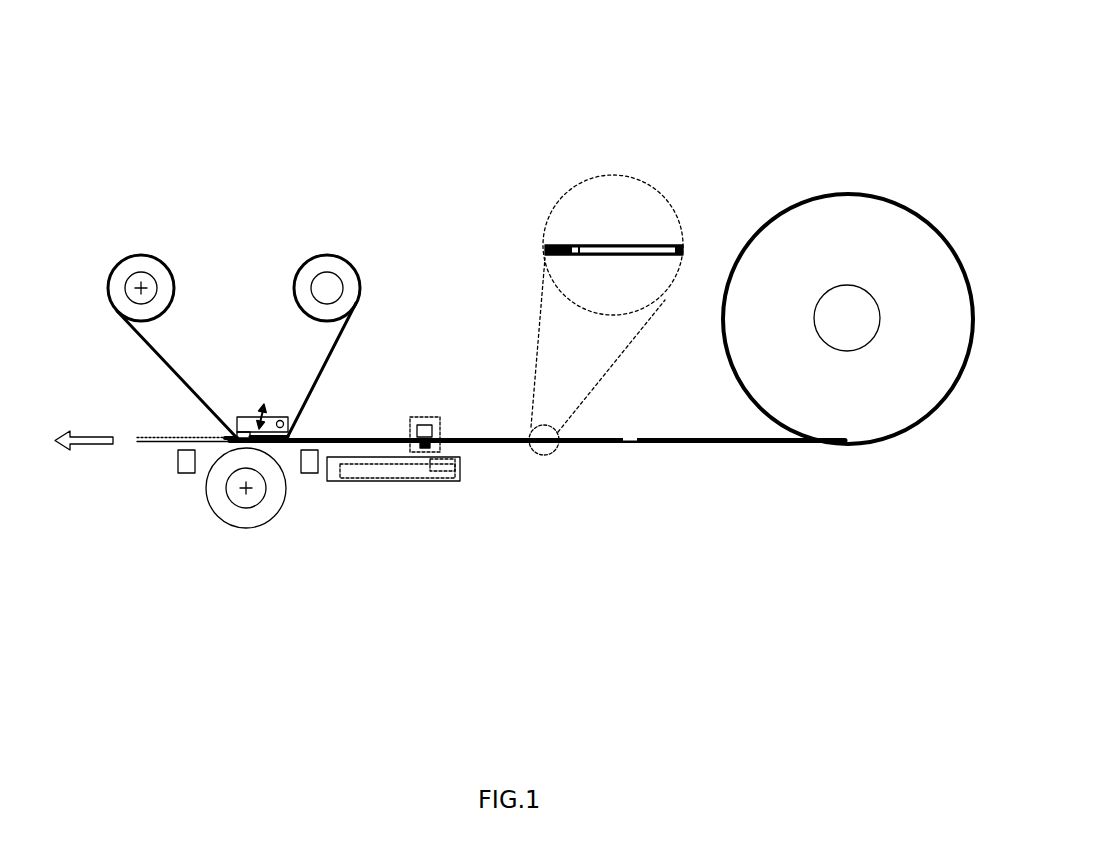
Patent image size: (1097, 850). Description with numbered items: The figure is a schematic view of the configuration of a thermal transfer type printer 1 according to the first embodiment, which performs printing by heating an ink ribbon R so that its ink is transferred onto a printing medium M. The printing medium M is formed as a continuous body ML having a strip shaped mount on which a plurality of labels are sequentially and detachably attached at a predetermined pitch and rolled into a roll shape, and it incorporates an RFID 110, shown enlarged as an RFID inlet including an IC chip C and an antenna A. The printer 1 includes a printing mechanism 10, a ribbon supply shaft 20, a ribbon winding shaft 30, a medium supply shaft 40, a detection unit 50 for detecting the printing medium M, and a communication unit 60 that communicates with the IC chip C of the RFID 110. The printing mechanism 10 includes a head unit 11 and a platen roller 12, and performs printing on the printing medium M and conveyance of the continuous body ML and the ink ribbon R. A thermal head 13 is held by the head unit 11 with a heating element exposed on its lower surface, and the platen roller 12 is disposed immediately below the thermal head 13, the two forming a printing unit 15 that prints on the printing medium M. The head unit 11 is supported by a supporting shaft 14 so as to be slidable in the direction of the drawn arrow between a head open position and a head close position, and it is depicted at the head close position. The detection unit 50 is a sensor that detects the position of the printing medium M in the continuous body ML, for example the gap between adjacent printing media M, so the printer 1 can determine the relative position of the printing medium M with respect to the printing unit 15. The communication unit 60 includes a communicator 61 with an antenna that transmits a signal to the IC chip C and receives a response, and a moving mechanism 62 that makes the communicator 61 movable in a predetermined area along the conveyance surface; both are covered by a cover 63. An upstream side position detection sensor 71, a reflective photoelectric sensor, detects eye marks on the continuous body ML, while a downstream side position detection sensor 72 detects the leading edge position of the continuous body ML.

The printer 1 is at (574, 137).
The printing mechanism 10 is at (178, 527).
The head unit 11 is at (244, 432).
The platen roller 12 is at (237, 528).
The thermal head 13 is at (233, 437).
The supporting shaft 14 is at (280, 420).
The printing unit 15 is at (213, 434).
The ribbon supply shaft 20 is at (328, 272).
The ribbon winding shaft 30 is at (141, 272).
The medium supply shaft 40 is at (863, 287).
The detection unit 50 is at (422, 417).
The communication unit 60 is at (433, 515).
The communicator 61 is at (460, 467).
The moving mechanism 62 is at (392, 476).
The cover 63 is at (360, 482).
The upstream side position detection sensor 71 is at (308, 474).
The downstream side position detection sensor 72 is at (178, 462).
The RFID 110 is at (614, 291).
The antenna A is at (622, 247).
The IC chip C is at (575, 247).
The printing medium M is at (487, 437).
The continuous body ML is at (857, 462).
The ink ribbon R is at (345, 327).